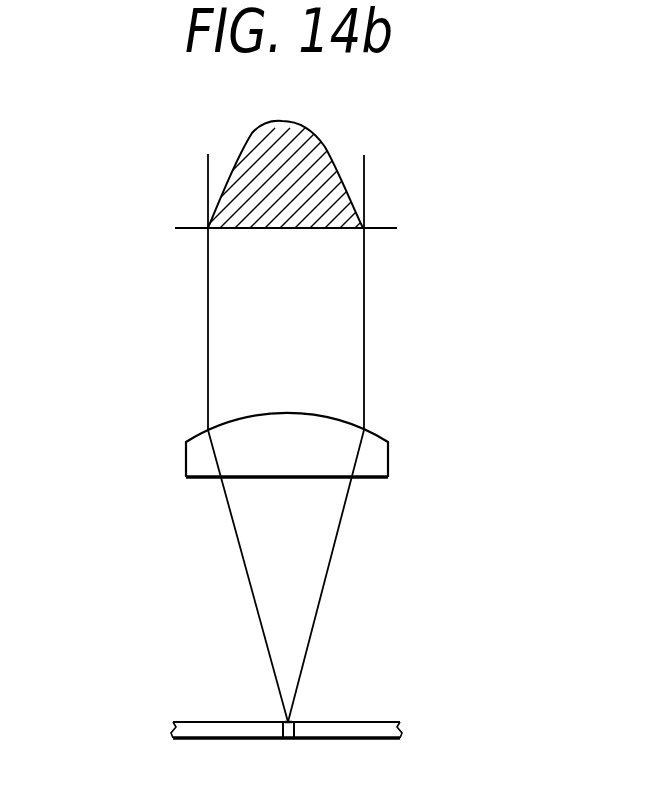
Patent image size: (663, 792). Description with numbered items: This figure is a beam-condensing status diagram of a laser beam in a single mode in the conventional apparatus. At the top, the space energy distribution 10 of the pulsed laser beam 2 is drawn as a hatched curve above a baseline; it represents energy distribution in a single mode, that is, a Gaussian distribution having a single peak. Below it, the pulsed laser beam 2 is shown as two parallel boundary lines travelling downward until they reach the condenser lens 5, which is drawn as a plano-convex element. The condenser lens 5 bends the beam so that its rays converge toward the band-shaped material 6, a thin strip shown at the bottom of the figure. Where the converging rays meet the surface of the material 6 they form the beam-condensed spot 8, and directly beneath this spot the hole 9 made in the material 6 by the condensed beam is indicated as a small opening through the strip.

The space energy distribution 10 is at (320, 147).
The pulsed laser beam 2 is at (348, 307).
The condenser lens 5 is at (374, 450).
The band-shaped material 6 is at (373, 728).
The beam-condensed spot 8 is at (300, 712).
The hole 9 is at (285, 740).